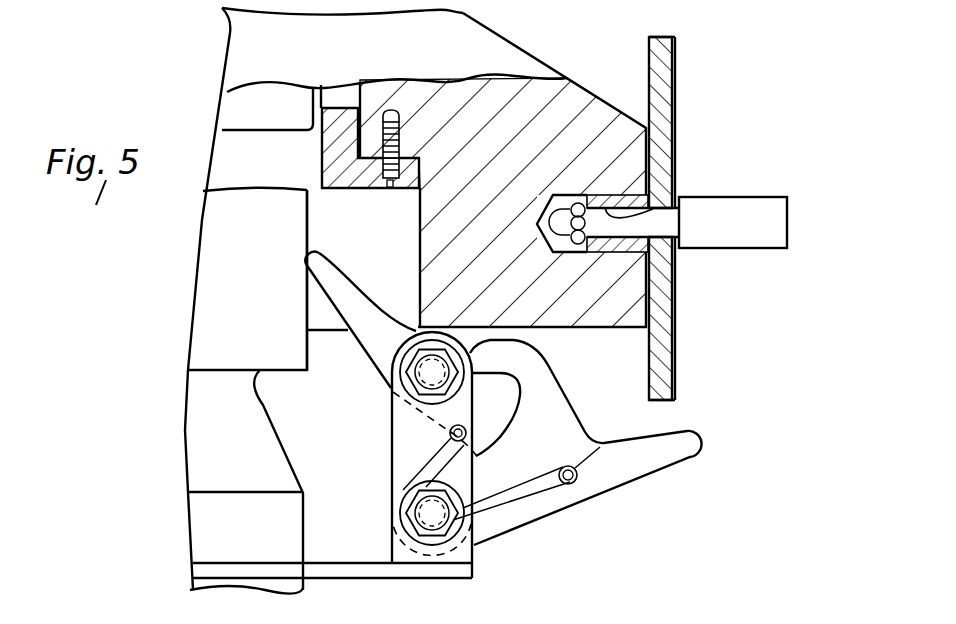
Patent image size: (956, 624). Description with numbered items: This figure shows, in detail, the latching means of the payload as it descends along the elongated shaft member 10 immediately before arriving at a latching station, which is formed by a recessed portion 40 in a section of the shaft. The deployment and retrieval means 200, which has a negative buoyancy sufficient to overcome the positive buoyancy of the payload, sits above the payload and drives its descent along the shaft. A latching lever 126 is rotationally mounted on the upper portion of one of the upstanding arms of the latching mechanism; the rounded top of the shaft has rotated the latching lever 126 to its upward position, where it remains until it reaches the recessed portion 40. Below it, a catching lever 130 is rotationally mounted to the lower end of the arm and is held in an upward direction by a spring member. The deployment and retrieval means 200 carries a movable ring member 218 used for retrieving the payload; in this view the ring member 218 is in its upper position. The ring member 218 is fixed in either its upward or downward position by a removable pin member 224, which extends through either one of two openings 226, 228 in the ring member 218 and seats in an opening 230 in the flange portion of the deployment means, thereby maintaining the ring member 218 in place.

The elongated shaft member 10 is at (241, 301).
The recessed portion 40 is at (293, 463).
The latching lever 126 is at (350, 300).
The catching lever 130 is at (643, 465).
The deployment and retrieval means 200 is at (556, 121).
The ring member 218 is at (672, 369).
The removable pin member 224 is at (720, 197).
The opening 226 is at (673, 110).
The opening 228 is at (663, 228).
The opening 230 is at (677, 188).